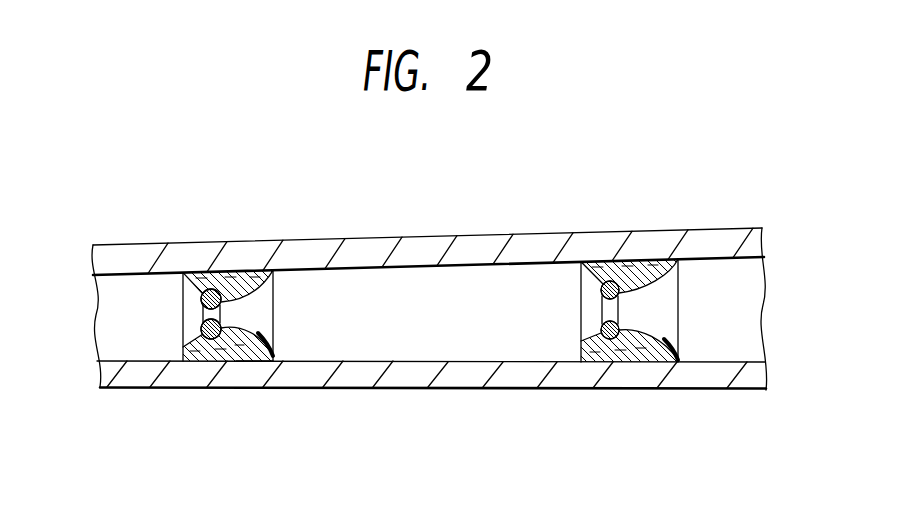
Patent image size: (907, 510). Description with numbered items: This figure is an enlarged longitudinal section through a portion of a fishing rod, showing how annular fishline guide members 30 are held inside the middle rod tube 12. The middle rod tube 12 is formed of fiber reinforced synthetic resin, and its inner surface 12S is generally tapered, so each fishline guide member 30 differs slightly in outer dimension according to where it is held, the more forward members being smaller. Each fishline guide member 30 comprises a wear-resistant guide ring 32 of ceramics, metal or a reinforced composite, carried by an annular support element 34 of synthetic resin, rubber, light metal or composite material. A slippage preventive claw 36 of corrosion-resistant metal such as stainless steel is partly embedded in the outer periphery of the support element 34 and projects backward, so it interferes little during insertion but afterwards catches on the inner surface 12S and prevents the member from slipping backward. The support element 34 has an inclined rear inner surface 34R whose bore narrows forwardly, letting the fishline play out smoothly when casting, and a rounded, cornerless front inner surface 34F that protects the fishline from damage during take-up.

The middle rod tube 12 is at (427, 247).
The inner surface of the rod tube 12S is at (316, 276).
The fishline guide member 30 is at (400, 304).
The guide ring 32 is at (205, 296).
The annular support element 34 is at (242, 290).
The front inner surface 34F is at (188, 336).
The rear inner surface 34R is at (248, 330).
The slippage preventive claw 36 is at (271, 313).